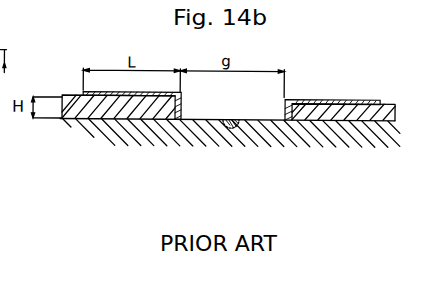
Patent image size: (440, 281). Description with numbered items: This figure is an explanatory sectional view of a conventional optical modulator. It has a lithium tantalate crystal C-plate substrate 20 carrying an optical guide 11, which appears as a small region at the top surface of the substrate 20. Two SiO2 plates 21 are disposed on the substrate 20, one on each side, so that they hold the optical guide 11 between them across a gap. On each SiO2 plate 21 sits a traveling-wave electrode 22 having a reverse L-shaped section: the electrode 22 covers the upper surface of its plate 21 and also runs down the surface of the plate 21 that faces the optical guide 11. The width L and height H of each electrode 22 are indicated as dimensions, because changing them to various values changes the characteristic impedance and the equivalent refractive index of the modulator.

The substrate 20 is at (105, 130).
The SiO2 plate 21 is at (151, 113).
The traveling-wave electrode 22 is at (168, 122).
The optical guide 11 is at (233, 128).